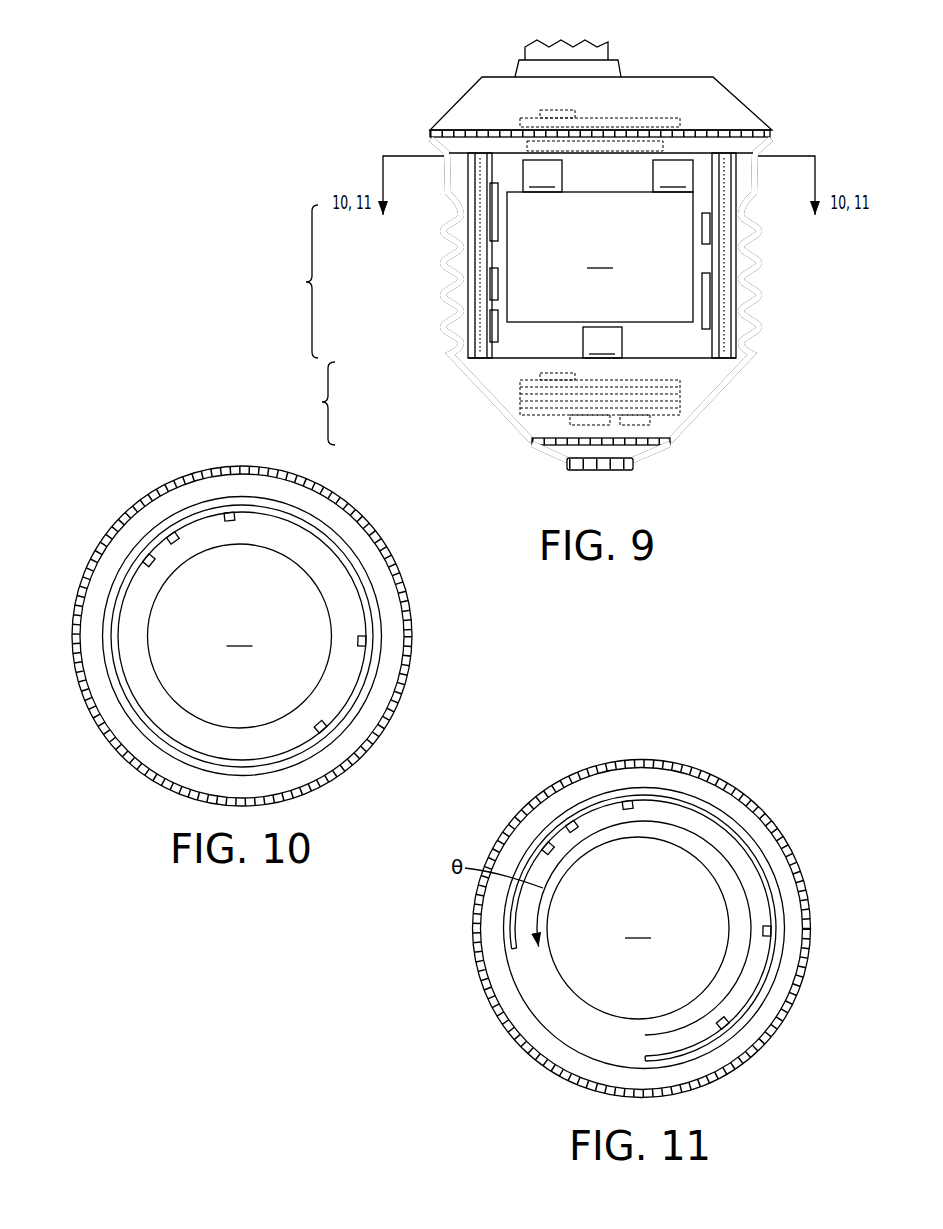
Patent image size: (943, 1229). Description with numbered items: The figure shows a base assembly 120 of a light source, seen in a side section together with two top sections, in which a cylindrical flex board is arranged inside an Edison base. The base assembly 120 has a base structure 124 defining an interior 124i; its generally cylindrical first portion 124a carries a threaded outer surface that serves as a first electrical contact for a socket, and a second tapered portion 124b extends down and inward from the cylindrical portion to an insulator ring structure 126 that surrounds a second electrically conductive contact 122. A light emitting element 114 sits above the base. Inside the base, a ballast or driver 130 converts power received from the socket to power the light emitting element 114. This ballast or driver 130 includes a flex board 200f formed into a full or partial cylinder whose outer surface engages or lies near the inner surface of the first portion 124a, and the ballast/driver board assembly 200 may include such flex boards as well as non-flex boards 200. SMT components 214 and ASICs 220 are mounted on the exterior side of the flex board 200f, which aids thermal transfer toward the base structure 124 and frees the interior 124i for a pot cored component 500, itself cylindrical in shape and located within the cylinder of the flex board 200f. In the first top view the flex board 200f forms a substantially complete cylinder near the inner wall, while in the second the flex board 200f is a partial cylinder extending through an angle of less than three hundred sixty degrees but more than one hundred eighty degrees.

In FIG. 9, the light emitting element 114 is at (525, 48).
In FIG. 9, the base assembly 120 is at (541, 279).
In FIG. 10, the base assembly 120 is at (257, 639).
In FIG. 11, the base assembly 120 is at (637, 929).
In FIG. 9, the second electrically conductive contact 122 is at (567, 466).
In FIG. 9, the base structure 124 is at (757, 243).
In FIG. 10, the base structure 124 is at (412, 685).
In FIG. 11, the base structure 124 is at (811, 929).
In FIG. 9, the first portion 124a is at (305, 281).
In FIG. 9, the second tapered portion 124b is at (321, 402).
In FIG. 9, the interior 124i is at (711, 373).
In FIG. 10, the interior 124i is at (126, 713).
In FIG. 11, the interior 124i is at (577, 1034).
In FIG. 9, the insulator ring structure 126 is at (643, 452).
In FIG. 9, the ballast or driver 130 is at (510, 393).
In FIG. 10, the ballast or driver 130 is at (389, 641).
In FIG. 11, the ballast or driver 130 is at (734, 1041).
In FIG. 9, the ballast/driver board assembly 200 is at (680, 125).
In FIG. 10, the ballast/driver board assembly 200 is at (360, 726).
In FIG. 11, the ballast/driver board assembly 200 is at (494, 950).
In FIG. 9, the flex board 200f is at (532, 360).
In FIG. 10, the flex board 200f is at (336, 541).
In FIG. 11, the flex board 200f is at (734, 833).
In FIG. 9, the SMT components 214 is at (490, 280).
In FIG. 10, the SMT components 214 is at (146, 560).
In FIG. 11, the SMT components 214 is at (547, 848).
In FIG. 9, the ASICs 220 is at (490, 212).
In FIG. 10, the ASICs 220 is at (178, 535).
In FIG. 11, the ASICs 220 is at (624, 805).
In FIG. 9, the pot cored component 500 is at (600, 257).
In FIG. 10, the pot cored component 500 is at (240, 636).
In FIG. 11, the pot cored component 500 is at (638, 928).